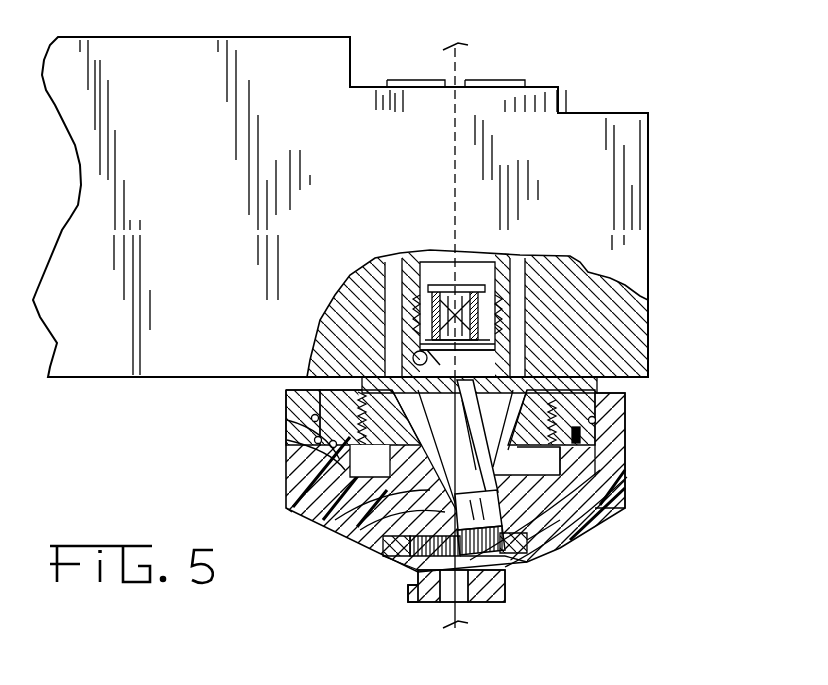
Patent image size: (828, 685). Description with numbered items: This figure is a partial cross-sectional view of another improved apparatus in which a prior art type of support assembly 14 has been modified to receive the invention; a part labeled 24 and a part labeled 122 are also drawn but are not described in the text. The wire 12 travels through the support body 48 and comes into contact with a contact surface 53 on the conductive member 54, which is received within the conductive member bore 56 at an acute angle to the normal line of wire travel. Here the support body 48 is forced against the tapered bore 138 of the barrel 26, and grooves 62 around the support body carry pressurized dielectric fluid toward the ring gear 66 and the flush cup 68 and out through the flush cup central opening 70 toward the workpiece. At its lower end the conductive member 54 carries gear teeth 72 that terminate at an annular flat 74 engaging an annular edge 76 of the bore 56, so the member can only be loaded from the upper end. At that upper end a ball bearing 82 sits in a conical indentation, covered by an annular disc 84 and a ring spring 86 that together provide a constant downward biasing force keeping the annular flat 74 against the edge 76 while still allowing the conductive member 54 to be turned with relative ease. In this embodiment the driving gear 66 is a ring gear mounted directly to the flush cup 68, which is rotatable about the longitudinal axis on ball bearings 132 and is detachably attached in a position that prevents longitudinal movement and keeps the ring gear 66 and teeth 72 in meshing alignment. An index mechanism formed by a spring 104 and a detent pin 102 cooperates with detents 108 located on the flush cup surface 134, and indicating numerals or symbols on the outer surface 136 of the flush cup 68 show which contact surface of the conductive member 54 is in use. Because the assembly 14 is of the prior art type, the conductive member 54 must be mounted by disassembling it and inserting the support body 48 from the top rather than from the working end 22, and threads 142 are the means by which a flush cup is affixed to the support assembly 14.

The wire 12 is at (457, 612).
The support assembly 14 is at (150, 385).
The working end 22 is at (612, 577).
The manifold block 24 is at (202, 222).
The barrel 26 is at (545, 295).
The support body 48 is at (520, 383).
The contact surface 53 is at (290, 508).
The conductive member 54 is at (335, 520).
The conductive member bore 56 is at (360, 530).
The grooves 62 is at (290, 478).
The ring gear 66 is at (415, 570).
The flush cup 68 is at (610, 517).
The flush cup central opening 70 is at (495, 590).
The gear teeth 72 is at (520, 562).
The annular flat 74 is at (567, 537).
The annular edge 76 is at (380, 557).
The ball bearing 82 is at (405, 355).
The annular disc 84 is at (403, 330).
The ring spring 86 is at (410, 318).
The detent pin 102 is at (627, 462).
The spring 104 is at (597, 440).
The detents 108 is at (318, 450).
The gate insert flange 122 is at (425, 602).
The ball bearings 132 is at (312, 419).
The flush cup surface 134 is at (315, 440).
The outer surface 136 is at (627, 400).
The tapered bore 138 is at (600, 472).
The threads 142 is at (370, 388).